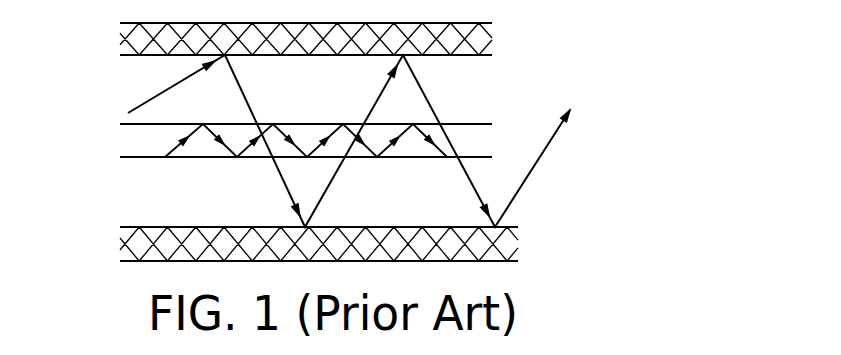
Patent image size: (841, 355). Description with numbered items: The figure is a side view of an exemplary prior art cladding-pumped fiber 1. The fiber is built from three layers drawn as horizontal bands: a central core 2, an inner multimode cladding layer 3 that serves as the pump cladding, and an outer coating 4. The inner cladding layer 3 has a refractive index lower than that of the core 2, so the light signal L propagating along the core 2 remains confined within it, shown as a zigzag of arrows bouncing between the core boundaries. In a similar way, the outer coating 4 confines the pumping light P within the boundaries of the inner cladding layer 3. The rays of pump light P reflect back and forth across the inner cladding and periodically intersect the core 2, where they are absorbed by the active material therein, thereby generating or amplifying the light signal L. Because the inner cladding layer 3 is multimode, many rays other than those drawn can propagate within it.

The cladding-pumped fiber 1 is at (344, 142).
The core 2 is at (480, 140).
The inner multimode cladding layer 3 is at (135, 213).
The outer coating 4 is at (487, 40).
The pump light P is at (141, 104).
The light signal L is at (168, 154).